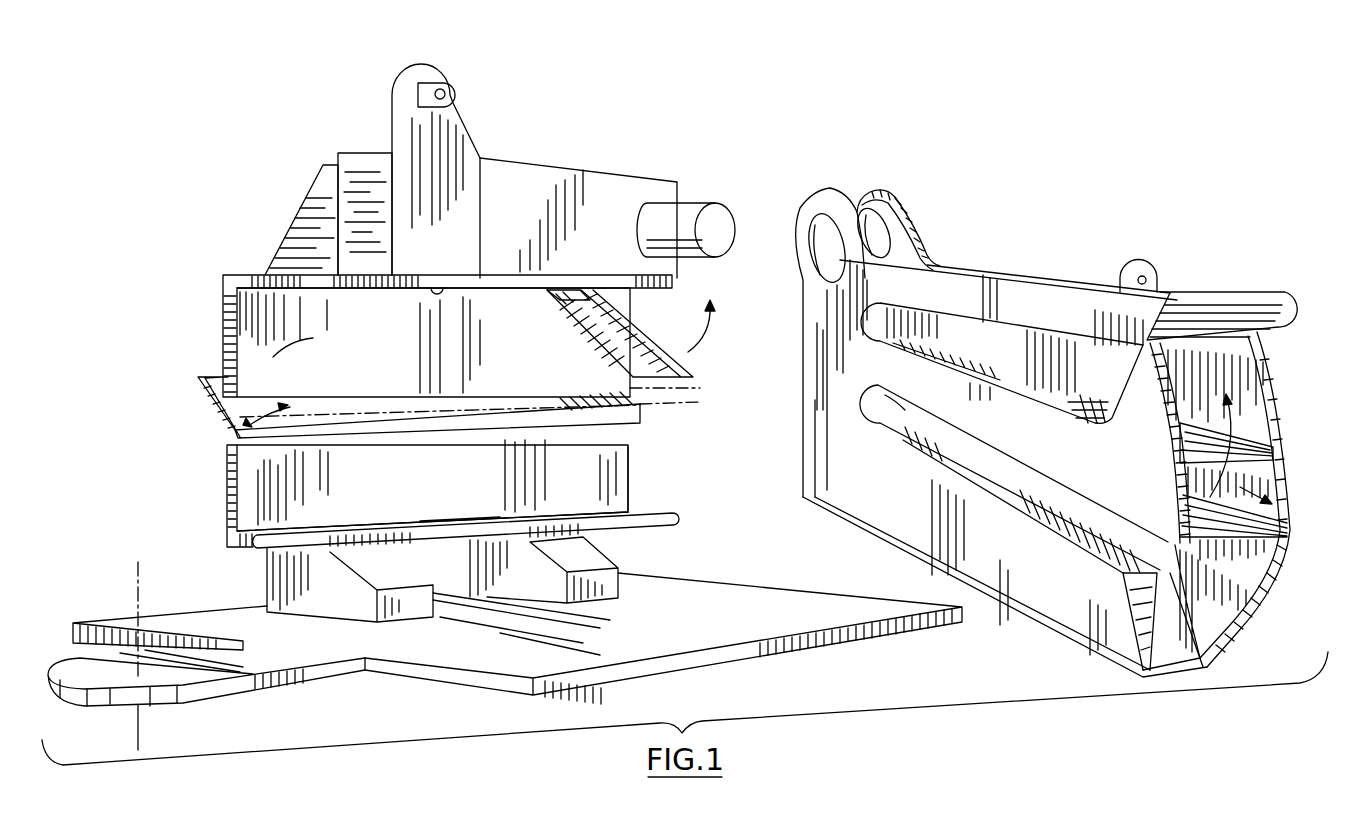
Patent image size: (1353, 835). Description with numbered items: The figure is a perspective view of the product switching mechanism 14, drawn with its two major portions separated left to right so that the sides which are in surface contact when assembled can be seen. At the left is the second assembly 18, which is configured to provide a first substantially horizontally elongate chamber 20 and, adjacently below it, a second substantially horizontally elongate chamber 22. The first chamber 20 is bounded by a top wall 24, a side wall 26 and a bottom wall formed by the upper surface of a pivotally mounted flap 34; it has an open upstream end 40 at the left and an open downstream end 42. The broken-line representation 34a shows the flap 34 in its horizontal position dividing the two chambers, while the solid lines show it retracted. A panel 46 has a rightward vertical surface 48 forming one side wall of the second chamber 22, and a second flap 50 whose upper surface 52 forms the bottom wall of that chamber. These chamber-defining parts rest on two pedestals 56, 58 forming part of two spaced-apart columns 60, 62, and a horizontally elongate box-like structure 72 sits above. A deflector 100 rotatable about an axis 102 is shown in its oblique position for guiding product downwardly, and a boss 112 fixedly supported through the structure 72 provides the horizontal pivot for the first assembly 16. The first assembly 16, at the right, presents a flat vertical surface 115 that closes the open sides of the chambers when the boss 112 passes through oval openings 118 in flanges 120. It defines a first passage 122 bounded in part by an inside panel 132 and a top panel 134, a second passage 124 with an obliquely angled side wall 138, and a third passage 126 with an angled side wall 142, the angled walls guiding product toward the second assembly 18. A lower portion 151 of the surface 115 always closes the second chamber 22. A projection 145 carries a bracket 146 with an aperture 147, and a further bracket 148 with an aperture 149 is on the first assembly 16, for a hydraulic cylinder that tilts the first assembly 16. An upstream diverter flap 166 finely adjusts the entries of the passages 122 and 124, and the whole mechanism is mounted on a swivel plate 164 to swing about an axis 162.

The product switching mechanism 14 is at (987, 177).
The first assembly 16 is at (1258, 337).
The second assembly 18 is at (268, 236).
The first substantially horizontally elongate chamber 20 is at (236, 322).
The second substantially horizontally elongate chamber 22 is at (236, 463).
The top wall 24 is at (446, 286).
The side wall 26 is at (290, 343).
The pivotally mounted flap 34 is at (647, 421).
The broken-line representation of the flap 34a is at (700, 394).
The upstream end 40 is at (225, 292).
The downstream end 42 is at (638, 300).
The panel 46 is at (620, 474).
The rightward vertical surface 48 is at (262, 500).
The second flap 50 is at (678, 517).
The upper surface 52 is at (450, 512).
The pedestal 56 is at (318, 606).
The pedestal 58 is at (606, 590).
The column 60 is at (316, 201).
The column 62 is at (470, 550).
The box-like structure 72 is at (560, 202).
The deflector 100 is at (588, 338).
The axis 102 is at (563, 306).
The boss 112 is at (700, 208).
The vertical surface 115 is at (983, 272).
The oval openings 118 is at (866, 214).
The flanges 120 is at (796, 231).
The first substantially horizontal passage 122 is at (1290, 511).
The second substantially horizontal passage 124 is at (1196, 368).
The third substantially horizontal passage 126 is at (1224, 591).
The inside panel 132 is at (902, 426).
The top panel 134 is at (1020, 366).
The side wall 138 is at (1073, 410).
The side wall 142 is at (1096, 550).
The projection 145 is at (465, 131).
The bracket 146 is at (443, 84).
The aperture 147 is at (447, 92).
The bracket 148 is at (1151, 269).
The aperture 149 is at (1131, 276).
The lower portion 151 is at (1003, 586).
The axis 162 is at (136, 574).
The swivel plate 164 is at (782, 620).
The upstream diverter flap 166 is at (1262, 446).